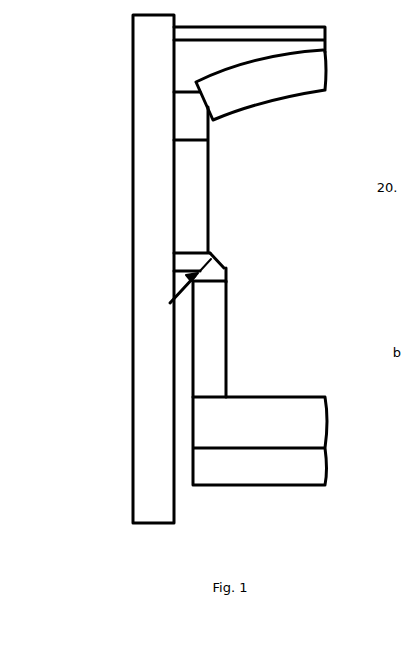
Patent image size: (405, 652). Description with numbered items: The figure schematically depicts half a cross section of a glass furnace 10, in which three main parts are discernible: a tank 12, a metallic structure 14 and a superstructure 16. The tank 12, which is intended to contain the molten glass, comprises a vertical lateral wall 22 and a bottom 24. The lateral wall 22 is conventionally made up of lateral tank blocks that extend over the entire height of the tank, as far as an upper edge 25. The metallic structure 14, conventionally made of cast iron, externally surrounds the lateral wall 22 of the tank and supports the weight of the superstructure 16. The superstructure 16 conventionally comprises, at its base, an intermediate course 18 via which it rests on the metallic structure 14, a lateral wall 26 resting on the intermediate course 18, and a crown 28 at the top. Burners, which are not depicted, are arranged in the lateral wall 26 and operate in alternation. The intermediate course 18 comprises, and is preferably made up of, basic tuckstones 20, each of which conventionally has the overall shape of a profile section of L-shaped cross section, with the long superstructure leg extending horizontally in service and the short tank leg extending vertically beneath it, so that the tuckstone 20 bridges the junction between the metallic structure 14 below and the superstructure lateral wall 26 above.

The glass furnace 10 is at (100, 167).
The tank 12 is at (288, 383).
The metallic structure 14 is at (135, 285).
The superstructure 16 is at (235, 165).
The intermediate course 18 is at (238, 273).
The basic tuckstone 20 is at (215, 258).
The lateral wall 22 is at (212, 328).
The bottom 24 is at (295, 417).
The upper edge 25 is at (237, 278).
The lateral wall 26 is at (196, 207).
The crown 28 is at (305, 82).